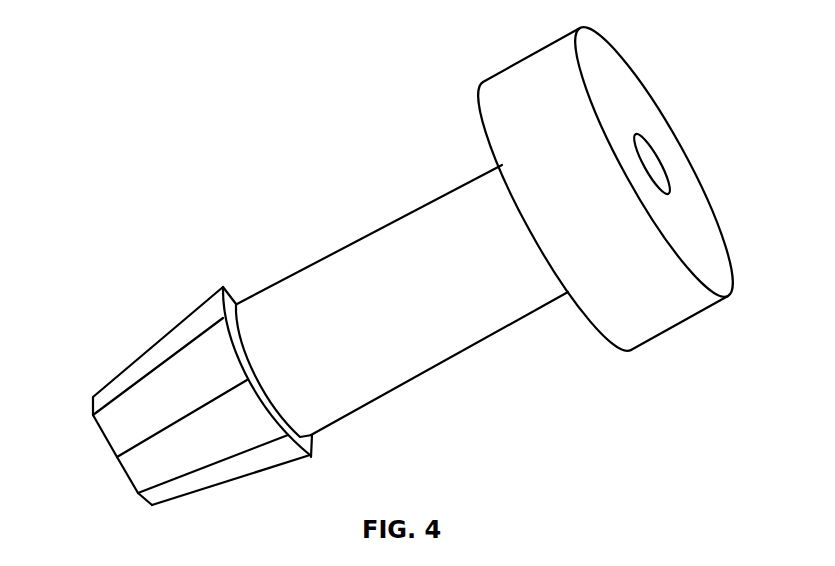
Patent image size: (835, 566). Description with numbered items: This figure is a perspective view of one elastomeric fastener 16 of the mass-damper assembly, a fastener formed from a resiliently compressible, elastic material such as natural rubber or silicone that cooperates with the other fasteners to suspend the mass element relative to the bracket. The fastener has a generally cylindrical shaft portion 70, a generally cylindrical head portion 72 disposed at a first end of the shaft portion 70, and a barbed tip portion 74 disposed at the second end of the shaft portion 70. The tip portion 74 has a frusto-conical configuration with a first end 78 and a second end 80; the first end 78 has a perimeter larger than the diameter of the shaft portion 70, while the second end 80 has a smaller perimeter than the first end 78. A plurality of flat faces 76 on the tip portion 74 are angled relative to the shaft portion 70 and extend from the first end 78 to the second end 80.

The elastomeric fastener 16 is at (281, 165).
The shaft portion 70 is at (370, 250).
The head portion 72 is at (623, 87).
The barbed tip portion 74 is at (127, 357).
The flat face 76 is at (98, 403).
The first end 78 is at (230, 301).
The second end 80 is at (148, 507).